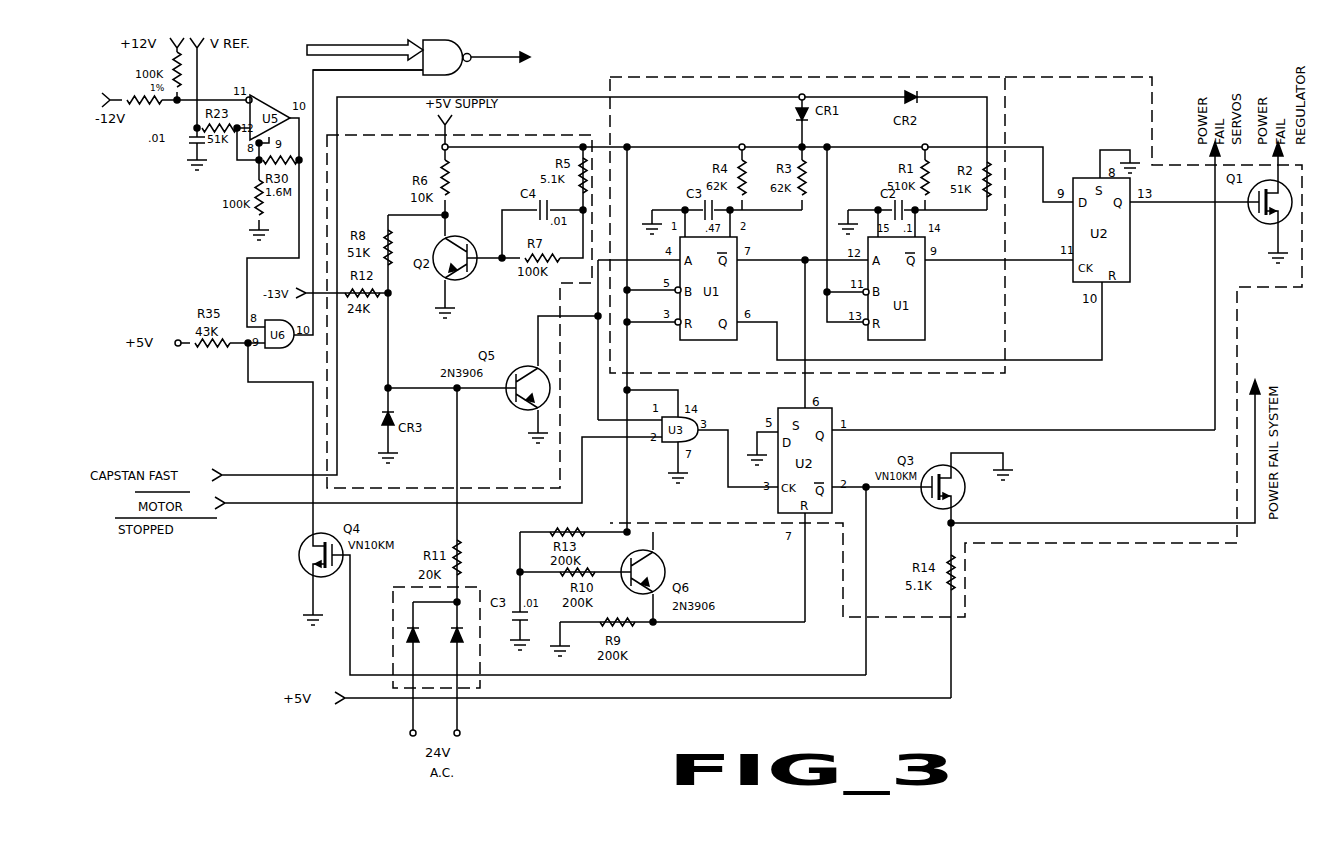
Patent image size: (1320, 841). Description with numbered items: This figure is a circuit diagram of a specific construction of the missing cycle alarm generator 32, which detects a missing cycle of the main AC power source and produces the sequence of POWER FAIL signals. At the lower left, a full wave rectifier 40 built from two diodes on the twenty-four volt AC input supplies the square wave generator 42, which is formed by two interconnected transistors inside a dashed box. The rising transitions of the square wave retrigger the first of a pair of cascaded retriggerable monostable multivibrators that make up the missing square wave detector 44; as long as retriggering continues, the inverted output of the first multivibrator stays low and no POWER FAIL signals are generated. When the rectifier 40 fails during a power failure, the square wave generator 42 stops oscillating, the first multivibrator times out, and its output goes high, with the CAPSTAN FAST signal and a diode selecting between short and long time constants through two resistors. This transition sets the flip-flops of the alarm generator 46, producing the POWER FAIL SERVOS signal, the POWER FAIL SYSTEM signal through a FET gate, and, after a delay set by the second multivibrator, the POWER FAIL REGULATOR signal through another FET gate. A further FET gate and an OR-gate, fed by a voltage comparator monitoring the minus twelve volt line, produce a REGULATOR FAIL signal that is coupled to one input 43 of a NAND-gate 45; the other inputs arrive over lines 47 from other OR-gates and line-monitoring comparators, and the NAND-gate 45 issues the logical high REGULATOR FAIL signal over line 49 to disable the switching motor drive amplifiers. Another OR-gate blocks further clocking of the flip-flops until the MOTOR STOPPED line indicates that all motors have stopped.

The missing cycle alarm generator 32 is at (956, 329).
The full wave rectifier 40 is at (392, 677).
The square wave generator 42 is at (373, 133).
The NAND-gate input 43 is at (378, 72).
The missing square wave detector 44 is at (716, 77).
The NAND-gate 45 is at (468, 54).
The alarm generator 46 is at (1038, 76).
The lines 47 is at (320, 55).
The line 49 is at (505, 57).